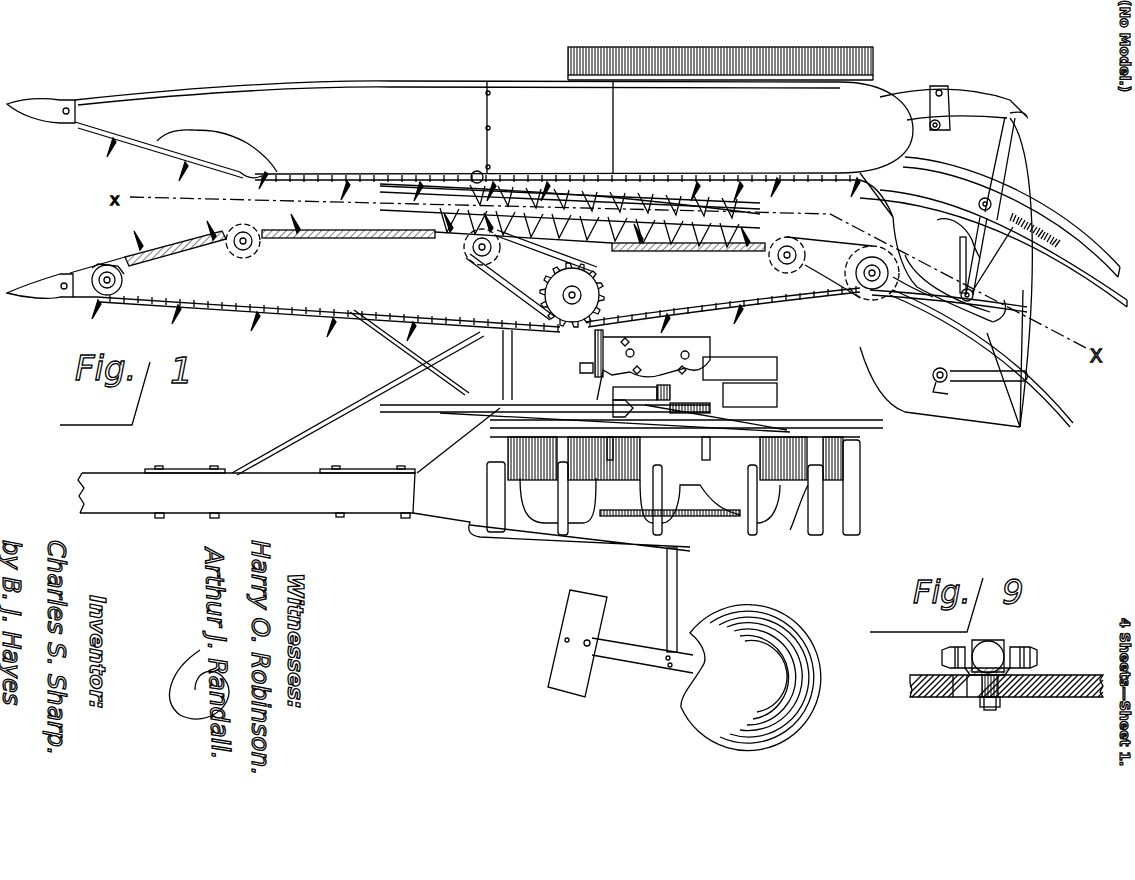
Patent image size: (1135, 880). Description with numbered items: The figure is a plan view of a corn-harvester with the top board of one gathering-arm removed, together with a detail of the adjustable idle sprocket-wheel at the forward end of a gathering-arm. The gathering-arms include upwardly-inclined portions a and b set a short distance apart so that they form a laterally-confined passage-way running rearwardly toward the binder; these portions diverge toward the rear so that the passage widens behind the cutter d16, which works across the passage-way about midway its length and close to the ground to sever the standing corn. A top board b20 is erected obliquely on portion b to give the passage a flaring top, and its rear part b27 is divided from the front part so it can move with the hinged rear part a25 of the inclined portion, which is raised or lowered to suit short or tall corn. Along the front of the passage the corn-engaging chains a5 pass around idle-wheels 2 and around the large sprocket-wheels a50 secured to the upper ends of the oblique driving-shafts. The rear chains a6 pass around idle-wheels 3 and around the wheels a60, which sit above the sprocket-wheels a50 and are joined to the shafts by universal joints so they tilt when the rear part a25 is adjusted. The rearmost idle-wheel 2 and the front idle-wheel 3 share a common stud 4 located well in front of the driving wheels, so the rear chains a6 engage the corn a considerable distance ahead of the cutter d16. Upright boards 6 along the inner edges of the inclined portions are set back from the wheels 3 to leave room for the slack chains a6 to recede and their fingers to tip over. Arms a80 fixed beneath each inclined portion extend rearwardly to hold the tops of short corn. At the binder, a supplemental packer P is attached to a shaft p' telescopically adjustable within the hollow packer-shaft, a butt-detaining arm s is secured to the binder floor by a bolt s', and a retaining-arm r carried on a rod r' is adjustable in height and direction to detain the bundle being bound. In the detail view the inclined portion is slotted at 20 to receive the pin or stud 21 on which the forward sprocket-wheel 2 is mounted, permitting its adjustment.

In FIG. 1, the top board b20 is at (423, 127).
In FIG. 1, the rear part of top board b27 is at (740, 110).
In FIG. 1, the upwardly-inclined portion b is at (185, 148).
In FIG. 1, the upwardly-inclined portion a is at (165, 242).
In FIG. 1, the corn-engaging chain a5 is at (410, 178).
In FIG. 1, the upright board 6 is at (600, 256).
In FIG. 1, the idle-wheel 2 is at (124, 283).
In FIG. 9, the idle-wheel 2 is at (1040, 660).
In FIG. 1, the idle-wheel 3 is at (462, 252).
In FIG. 1, the stud 4 is at (480, 262).
In FIG. 1, the sprocket-wheel a60 is at (600, 288).
In FIG. 1, the arm a80 is at (550, 190).
In FIG. 1, the cutter d16 is at (588, 215).
In FIG. 1, the corn-engaging chain a6 is at (780, 190).
In FIG. 1, the supplemental packer P is at (913, 107).
In FIG. 1, the shaft p' is at (972, 153).
In FIG. 1, the butt-detaining arm s is at (1001, 239).
In FIG. 1, the bolt s' is at (972, 259).
In FIG. 1, the lever bracket r is at (966, 358).
In FIG. 1, the bracket pivot r' is at (950, 388).
In FIG. 1, the sprocket-wheel a50 is at (606, 373).
In FIG. 1, the rear part of inclined portion a25 is at (815, 322).
In FIG. 9, the slot 20 is at (963, 690).
In FIG. 9, the pin or stud 21 is at (995, 706).